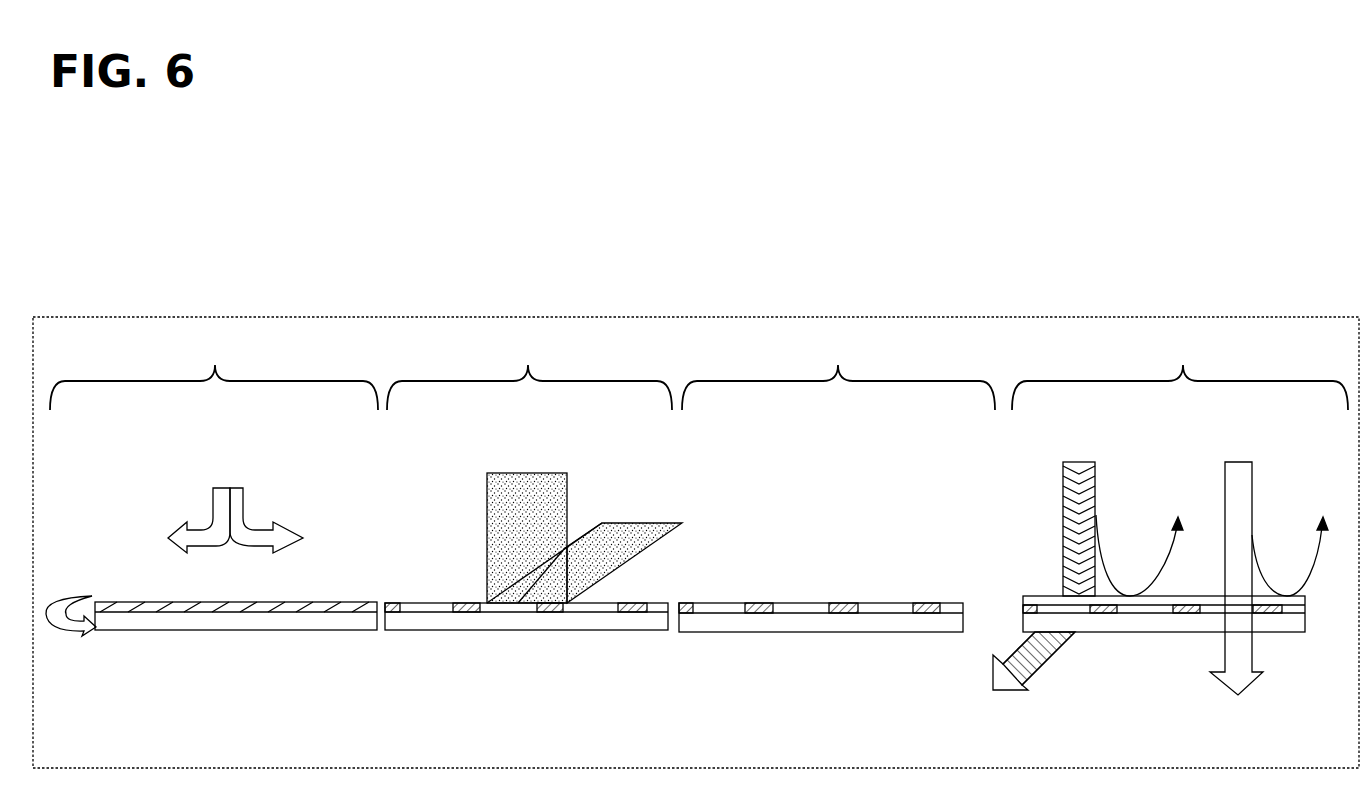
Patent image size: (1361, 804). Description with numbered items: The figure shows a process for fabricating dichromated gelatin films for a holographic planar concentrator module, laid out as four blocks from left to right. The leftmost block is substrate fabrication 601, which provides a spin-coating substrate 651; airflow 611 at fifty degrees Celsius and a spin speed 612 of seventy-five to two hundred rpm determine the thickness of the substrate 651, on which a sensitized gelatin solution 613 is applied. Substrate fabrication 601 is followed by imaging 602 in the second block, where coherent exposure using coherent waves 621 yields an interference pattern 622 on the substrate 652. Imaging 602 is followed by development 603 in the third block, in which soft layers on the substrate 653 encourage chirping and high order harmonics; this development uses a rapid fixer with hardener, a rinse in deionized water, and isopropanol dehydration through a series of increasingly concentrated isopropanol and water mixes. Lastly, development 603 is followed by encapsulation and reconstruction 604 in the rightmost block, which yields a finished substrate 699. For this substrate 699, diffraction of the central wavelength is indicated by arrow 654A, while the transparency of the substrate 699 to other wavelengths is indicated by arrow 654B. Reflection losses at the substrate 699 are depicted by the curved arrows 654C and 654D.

The substrate fabrication 601 is at (196, 358).
The imaging 602 is at (509, 358).
The development 603 is at (819, 358).
The encapsulation and reconstruction 604 is at (1164, 358).
The airflow 611 is at (216, 460).
The spin speed 612 is at (116, 543).
The sensitized gelatin solution 613 is at (219, 606).
The coherent waves 621 is at (509, 458).
The interference pattern 622 is at (468, 604).
The substrate 651 is at (214, 660).
The substrate 652 is at (516, 658).
The substrate 653 is at (811, 662).
The diffraction in the central wavelength 654A is at (985, 732).
The transparency to other wavelengths 654B is at (1222, 732).
The reflection loss 654C is at (1148, 507).
The reflection loss 654D is at (1298, 507).
The substrate 699 is at (1136, 658).